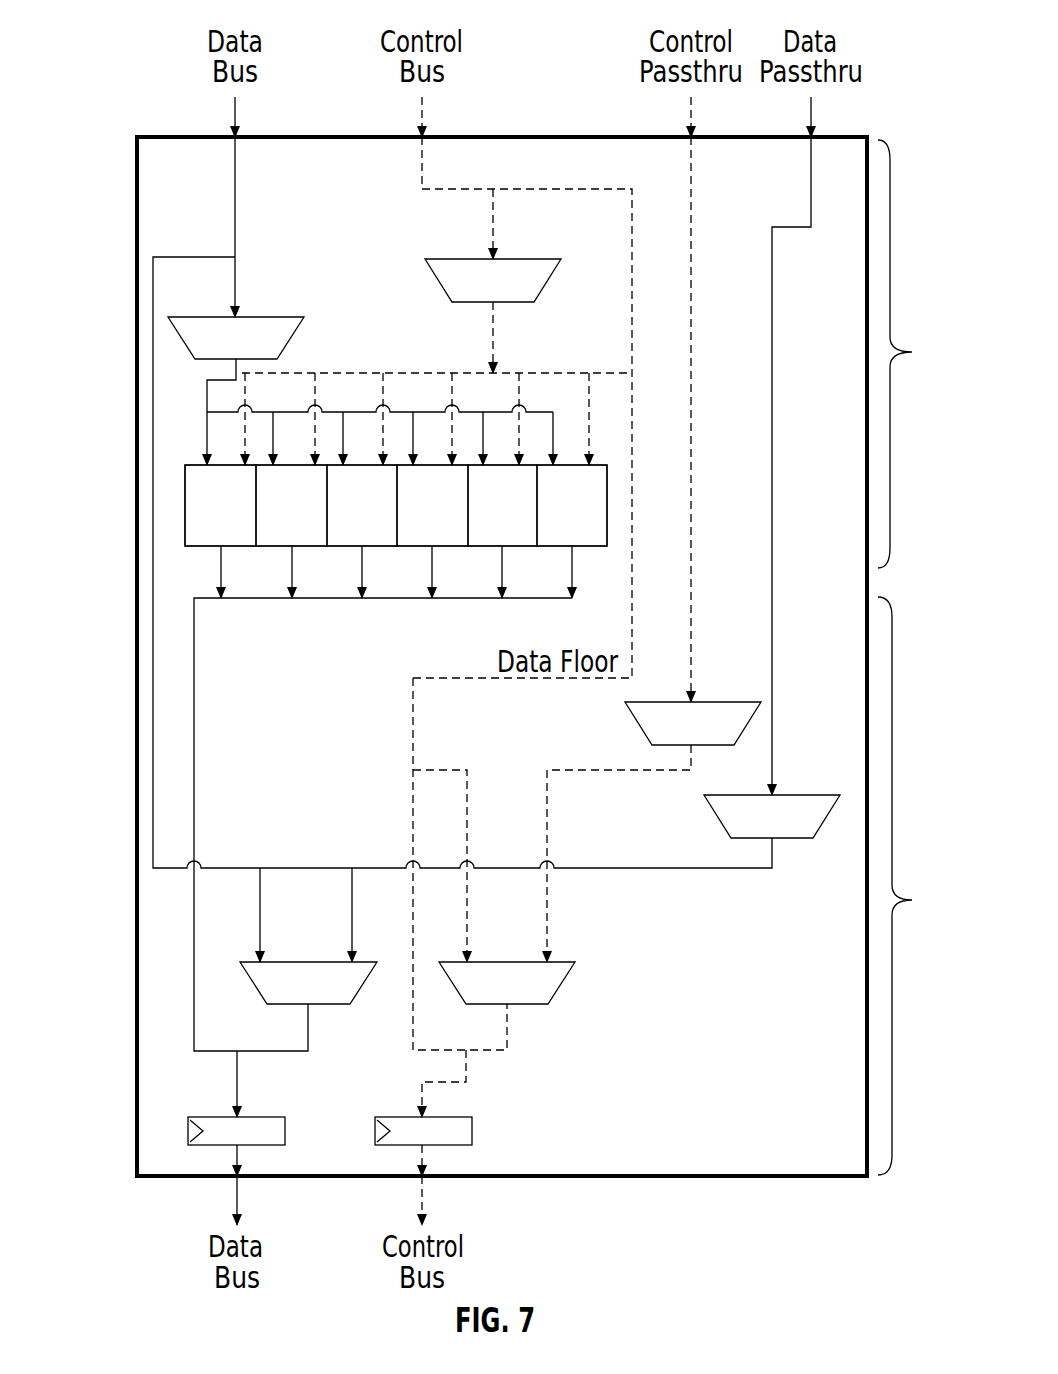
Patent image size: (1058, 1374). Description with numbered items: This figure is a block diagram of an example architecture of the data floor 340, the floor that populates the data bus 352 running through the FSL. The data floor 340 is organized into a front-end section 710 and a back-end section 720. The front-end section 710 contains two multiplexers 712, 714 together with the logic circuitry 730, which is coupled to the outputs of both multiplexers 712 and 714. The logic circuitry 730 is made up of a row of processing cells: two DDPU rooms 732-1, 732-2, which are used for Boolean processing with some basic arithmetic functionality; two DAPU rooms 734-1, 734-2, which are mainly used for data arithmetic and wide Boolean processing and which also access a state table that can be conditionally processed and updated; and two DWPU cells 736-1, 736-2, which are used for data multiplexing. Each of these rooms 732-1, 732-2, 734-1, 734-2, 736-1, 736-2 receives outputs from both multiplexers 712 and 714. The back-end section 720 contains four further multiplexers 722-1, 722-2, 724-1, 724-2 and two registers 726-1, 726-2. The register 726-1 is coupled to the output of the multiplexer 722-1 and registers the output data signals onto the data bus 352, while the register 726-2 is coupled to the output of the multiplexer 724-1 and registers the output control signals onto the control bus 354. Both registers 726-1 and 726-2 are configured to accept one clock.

The data floor 340 is at (868, 27).
The data bus 352 is at (238, 108).
The control bus 354 is at (425, 108).
The front-end section 710 is at (919, 354).
The back-end section 720 is at (921, 886).
The multiplexer 712 is at (272, 317).
The multiplexer 714 is at (527, 259).
The multiplexer 722-1 is at (290, 962).
The multiplexer 722-2 is at (798, 795).
The multiplexer 724-1 is at (560, 985).
The multiplexer 724-2 is at (713, 702).
The register 726-1 is at (262, 1117).
The register 726-2 is at (452, 1117).
The logic circuitry 730 is at (607, 500).
The DDPU cell 732-1 is at (185, 520).
The DDPU cell 732-2 is at (277, 546).
The DAPU cell 734-1 is at (347, 546).
The DAPU cell 734-2 is at (417, 546).
The DWPU cell 736-1 is at (487, 546).
The DWPU cell 736-2 is at (557, 546).